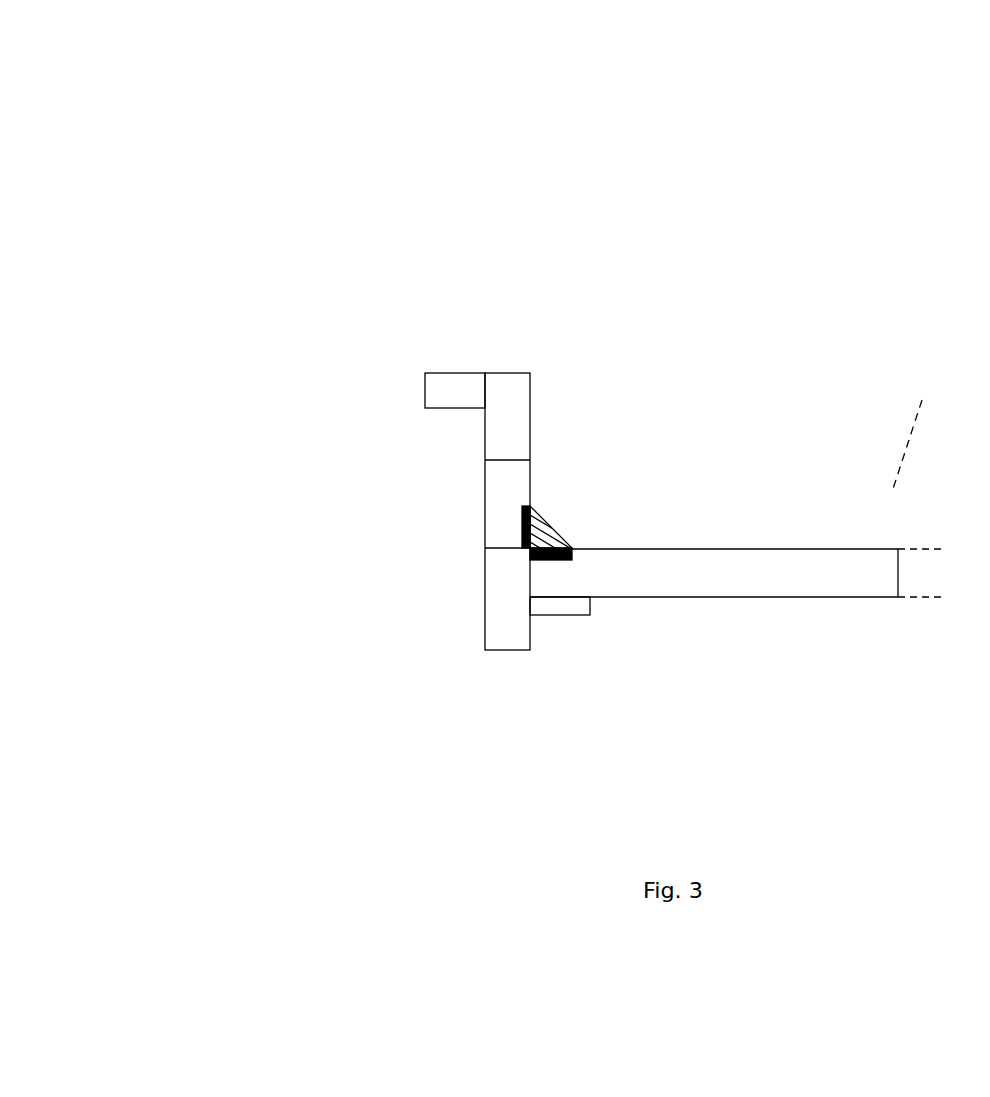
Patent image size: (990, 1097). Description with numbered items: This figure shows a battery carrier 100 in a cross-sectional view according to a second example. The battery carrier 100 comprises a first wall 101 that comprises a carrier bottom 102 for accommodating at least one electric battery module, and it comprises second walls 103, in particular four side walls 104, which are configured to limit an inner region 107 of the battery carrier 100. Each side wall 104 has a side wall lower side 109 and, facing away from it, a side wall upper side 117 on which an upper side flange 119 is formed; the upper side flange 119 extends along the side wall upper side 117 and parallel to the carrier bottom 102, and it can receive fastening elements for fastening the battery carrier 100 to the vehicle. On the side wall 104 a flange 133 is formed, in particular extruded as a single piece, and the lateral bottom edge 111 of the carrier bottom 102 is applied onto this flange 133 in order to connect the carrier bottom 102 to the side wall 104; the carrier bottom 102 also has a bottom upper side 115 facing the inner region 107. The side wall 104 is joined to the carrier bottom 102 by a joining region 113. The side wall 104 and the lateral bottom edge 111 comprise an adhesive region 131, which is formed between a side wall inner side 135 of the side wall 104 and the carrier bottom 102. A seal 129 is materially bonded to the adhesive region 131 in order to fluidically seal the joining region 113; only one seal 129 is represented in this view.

The battery carrier 100 is at (225, 103).
The first wall 101 is at (845, 583).
The carrier bottom 102 is at (735, 573).
The second walls 103 is at (530, 385).
The side wall 104 is at (507, 416).
The inner region 107 is at (922, 418).
The side wall lower side 109 is at (507, 650).
The lateral bottom edge 111 is at (548, 598).
The joining region 113 is at (533, 547).
The bottom upper side 115 is at (797, 549).
The side wall upper side 117 is at (510, 373).
The upper side flange 119 is at (467, 383).
The seal 129 is at (547, 525).
The adhesive region 131 is at (522, 515).
The flange 133 is at (570, 615).
The side wall inner side 135 is at (530, 422).